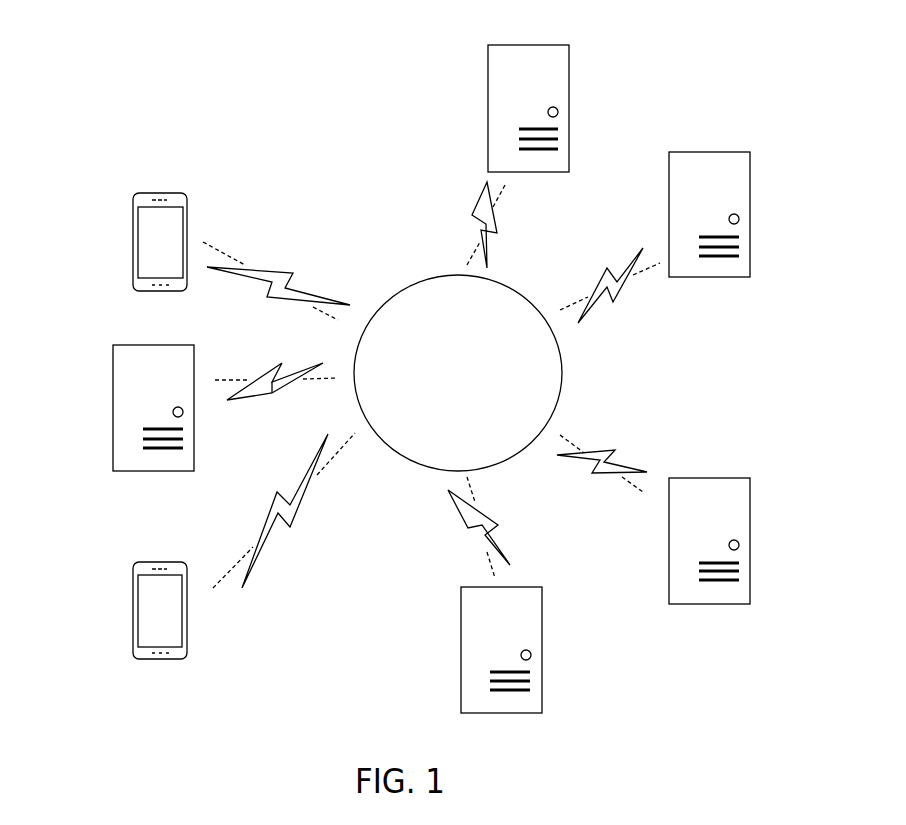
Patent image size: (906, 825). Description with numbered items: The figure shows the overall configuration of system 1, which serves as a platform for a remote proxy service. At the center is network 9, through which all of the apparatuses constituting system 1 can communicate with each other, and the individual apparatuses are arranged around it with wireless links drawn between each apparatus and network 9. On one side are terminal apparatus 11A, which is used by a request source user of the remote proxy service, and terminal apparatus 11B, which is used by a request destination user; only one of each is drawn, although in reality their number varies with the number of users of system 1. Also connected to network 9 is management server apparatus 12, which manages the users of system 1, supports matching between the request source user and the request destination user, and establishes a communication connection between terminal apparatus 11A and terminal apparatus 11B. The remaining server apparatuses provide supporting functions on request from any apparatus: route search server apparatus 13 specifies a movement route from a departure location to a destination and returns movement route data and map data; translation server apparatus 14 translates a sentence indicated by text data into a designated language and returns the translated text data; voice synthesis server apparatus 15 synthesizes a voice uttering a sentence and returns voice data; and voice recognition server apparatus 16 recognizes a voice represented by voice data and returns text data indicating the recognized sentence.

The system 1 is at (347, 115).
The network 9 is at (562, 392).
The terminal apparatus 11A is at (152, 225).
The terminal apparatus 11B is at (148, 608).
The management server apparatus 12 is at (113, 389).
The route search server apparatus 13 is at (570, 83).
The translation server apparatus 14 is at (750, 194).
The voice synthesis server apparatus 15 is at (750, 518).
The voice recognition server apparatus 16 is at (542, 667).